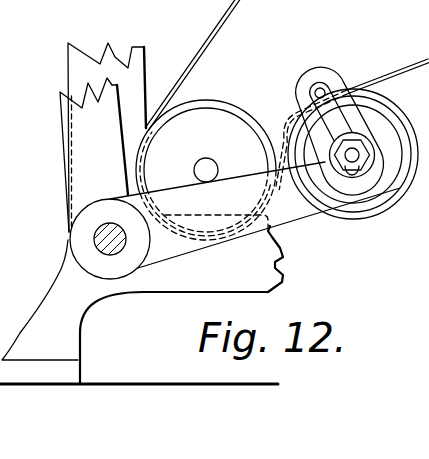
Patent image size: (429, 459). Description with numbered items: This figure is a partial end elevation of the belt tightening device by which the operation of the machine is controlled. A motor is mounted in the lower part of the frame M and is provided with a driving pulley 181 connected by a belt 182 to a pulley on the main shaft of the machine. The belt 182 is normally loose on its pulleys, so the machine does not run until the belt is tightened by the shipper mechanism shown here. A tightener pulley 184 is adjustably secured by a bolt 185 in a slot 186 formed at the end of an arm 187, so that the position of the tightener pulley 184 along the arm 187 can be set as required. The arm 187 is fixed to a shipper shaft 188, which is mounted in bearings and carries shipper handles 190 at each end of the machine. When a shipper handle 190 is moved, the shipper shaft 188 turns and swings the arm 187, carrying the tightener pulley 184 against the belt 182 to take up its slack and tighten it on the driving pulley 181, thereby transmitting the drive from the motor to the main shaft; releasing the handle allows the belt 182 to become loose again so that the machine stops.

The driving pulley 181 is at (242, 117).
The belt 182 is at (385, 73).
The tightener pulley 184 is at (397, 113).
The bolt 185 is at (353, 160).
The slot 186 is at (323, 87).
The arm 187 is at (295, 208).
The shipper shaft 188 is at (94, 239).
The shipper handles 190 is at (63, 110).
The frame M is at (97, 303).